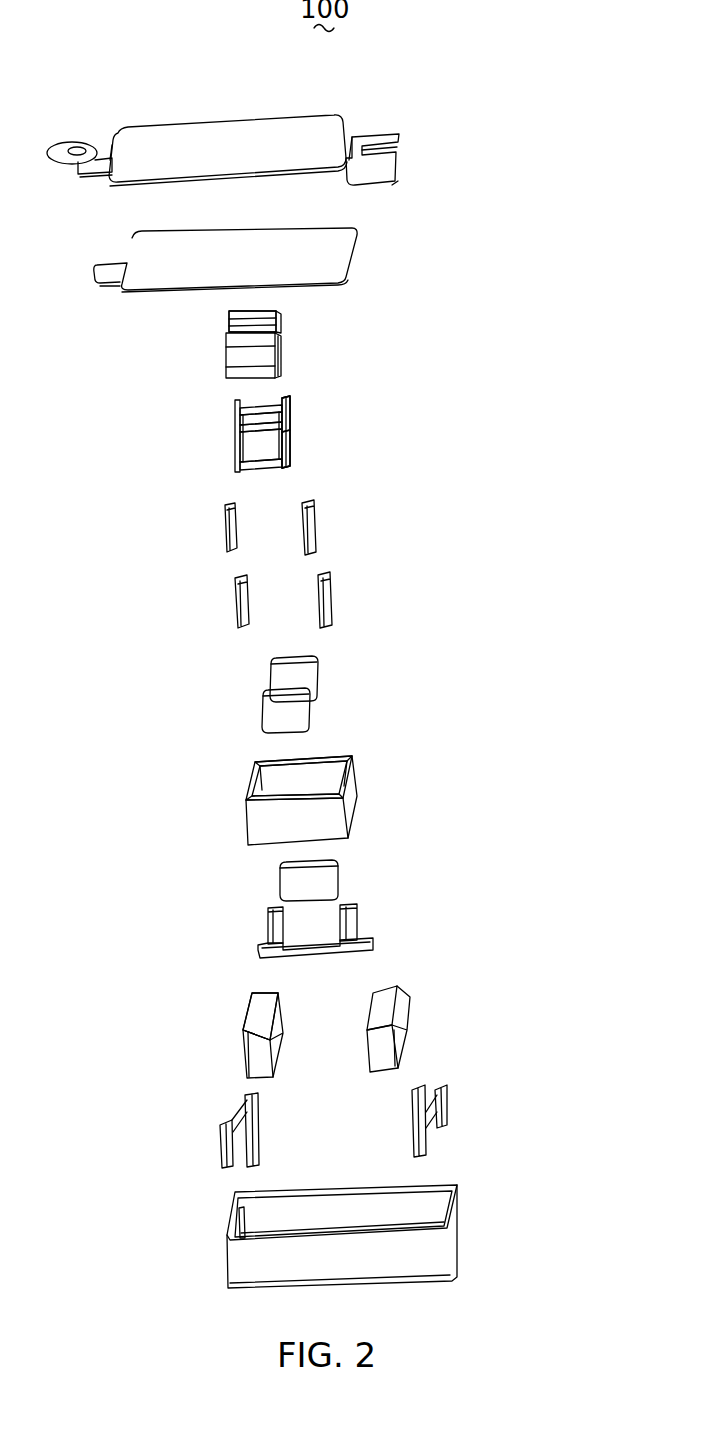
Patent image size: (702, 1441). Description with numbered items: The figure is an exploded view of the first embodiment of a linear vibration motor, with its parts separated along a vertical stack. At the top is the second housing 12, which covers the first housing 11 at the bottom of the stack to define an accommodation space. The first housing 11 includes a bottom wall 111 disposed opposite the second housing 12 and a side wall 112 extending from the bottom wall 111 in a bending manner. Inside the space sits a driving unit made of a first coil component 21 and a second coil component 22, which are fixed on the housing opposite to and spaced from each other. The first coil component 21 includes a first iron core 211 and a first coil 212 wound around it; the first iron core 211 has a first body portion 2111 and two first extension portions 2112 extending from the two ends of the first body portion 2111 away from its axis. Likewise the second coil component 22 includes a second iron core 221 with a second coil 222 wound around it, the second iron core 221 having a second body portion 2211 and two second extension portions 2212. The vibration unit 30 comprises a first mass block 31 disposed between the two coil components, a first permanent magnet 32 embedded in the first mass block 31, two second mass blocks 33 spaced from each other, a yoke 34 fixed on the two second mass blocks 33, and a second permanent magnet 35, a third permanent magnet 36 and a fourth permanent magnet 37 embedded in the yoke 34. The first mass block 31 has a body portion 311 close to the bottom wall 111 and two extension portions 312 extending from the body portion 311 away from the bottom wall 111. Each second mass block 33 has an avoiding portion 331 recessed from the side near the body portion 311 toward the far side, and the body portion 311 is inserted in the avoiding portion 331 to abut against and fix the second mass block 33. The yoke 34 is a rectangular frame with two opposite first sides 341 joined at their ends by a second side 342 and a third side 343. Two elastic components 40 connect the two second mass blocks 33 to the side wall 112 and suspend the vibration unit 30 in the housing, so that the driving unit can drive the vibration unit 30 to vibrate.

The second housing 12 is at (330, 260).
The first housing 11 is at (534, 1197).
The bottom wall 111 is at (455, 1250).
The side wall 112 is at (458, 1223).
The first coil component 21 is at (84, 375).
The first iron core 211 is at (145, 418).
The first body portion 2111 is at (247, 447).
The first extension portions 2112 is at (233, 453).
The first coil 212 is at (240, 360).
The second coil component 22 is at (427, 353).
The second iron core 221 is at (371, 378).
The second body portion 2211 is at (280, 406).
The second extension portions 2212 is at (288, 424).
The second coil 222 is at (272, 323).
The vibration unit 30 is at (492, 506).
The first mass block 31 is at (447, 898).
The body portion 311 is at (348, 950).
The extension portions 312 is at (343, 928).
The first permanent magnet 32 is at (327, 888).
The second mass block 33 is at (393, 1002).
The avoiding portion 331 is at (272, 1038).
The yoke 34 is at (441, 737).
The first sides 341 is at (348, 782).
The second side 342 is at (310, 798).
The third side 343 is at (333, 757).
The second permanent magnet 35 is at (330, 598).
The third permanent magnet 36 is at (318, 527).
The fourth permanent magnet 37 is at (307, 677).
The elastic component 40 is at (442, 1123).